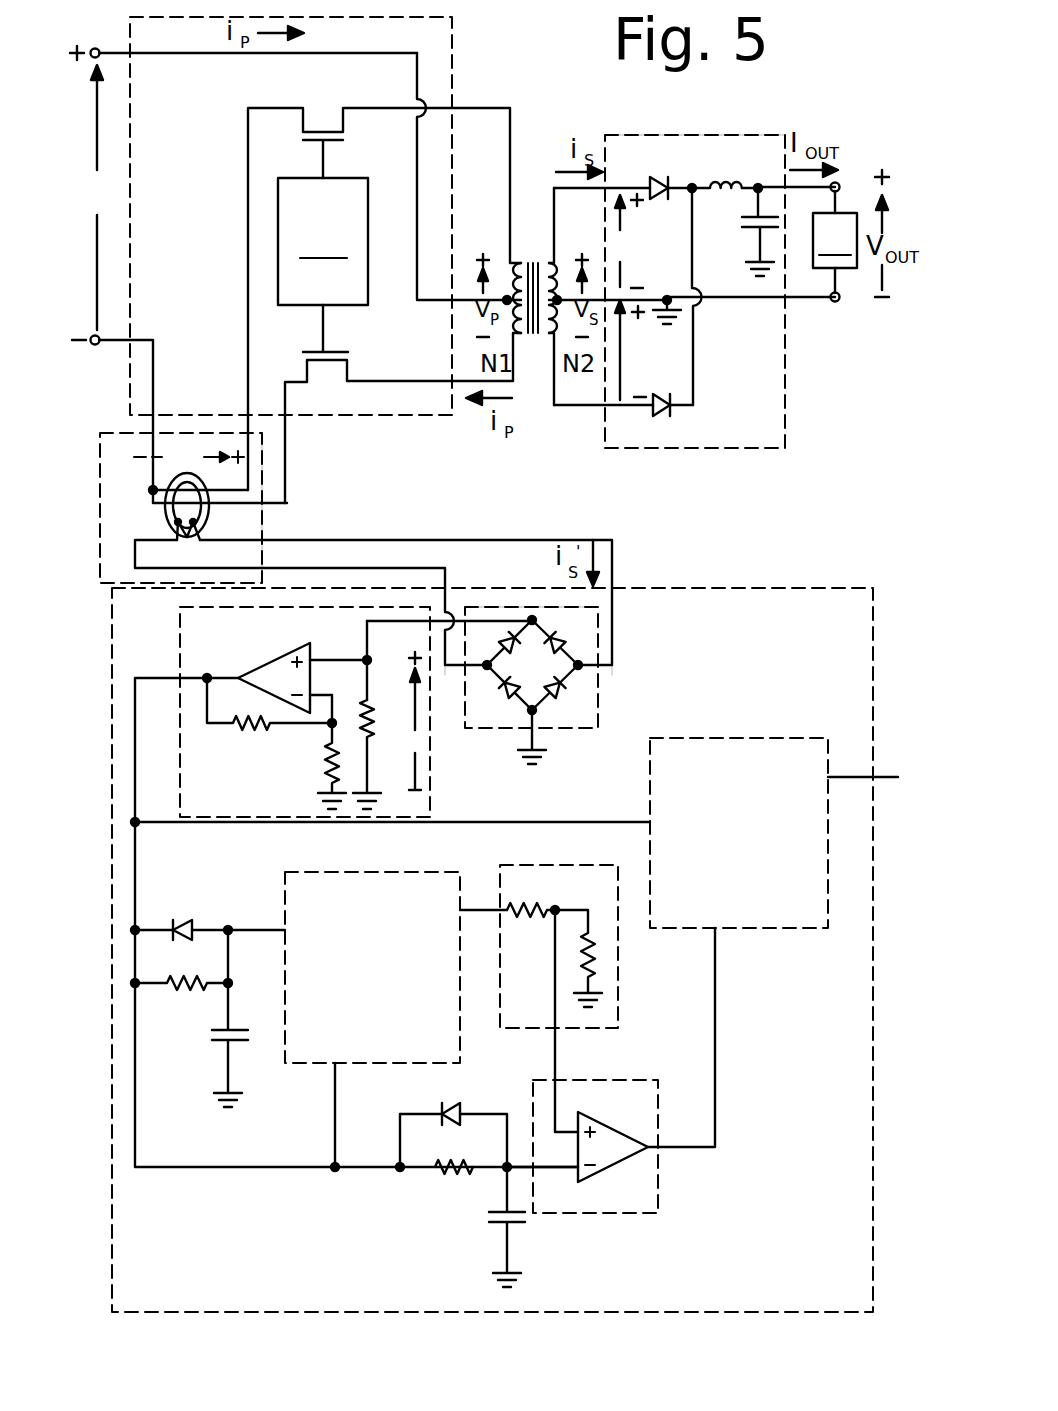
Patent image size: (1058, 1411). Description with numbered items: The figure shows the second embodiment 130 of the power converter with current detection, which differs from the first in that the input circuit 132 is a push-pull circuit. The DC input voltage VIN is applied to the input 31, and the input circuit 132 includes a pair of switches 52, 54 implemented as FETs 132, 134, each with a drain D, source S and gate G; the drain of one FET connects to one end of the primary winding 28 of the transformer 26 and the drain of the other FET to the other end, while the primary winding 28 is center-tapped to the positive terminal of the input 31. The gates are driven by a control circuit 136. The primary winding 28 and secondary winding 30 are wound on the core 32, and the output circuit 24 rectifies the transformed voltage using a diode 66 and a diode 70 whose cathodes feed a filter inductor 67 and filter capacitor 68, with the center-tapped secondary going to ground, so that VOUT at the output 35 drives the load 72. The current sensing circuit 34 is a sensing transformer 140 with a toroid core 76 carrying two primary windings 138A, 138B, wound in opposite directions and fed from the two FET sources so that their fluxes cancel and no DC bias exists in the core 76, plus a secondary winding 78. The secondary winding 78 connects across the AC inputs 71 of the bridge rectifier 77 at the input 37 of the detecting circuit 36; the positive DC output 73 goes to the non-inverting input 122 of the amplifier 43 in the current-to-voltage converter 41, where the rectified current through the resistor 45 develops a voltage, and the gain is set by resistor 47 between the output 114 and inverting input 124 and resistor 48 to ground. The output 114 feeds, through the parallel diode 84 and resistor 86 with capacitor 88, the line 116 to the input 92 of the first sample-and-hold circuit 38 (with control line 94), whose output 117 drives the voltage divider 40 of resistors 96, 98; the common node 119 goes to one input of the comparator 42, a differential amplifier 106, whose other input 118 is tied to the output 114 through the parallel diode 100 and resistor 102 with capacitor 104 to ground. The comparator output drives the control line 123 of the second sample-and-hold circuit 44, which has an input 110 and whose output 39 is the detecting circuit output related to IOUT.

The output circuit 24 is at (694, 269).
The transformer 26 is at (567, 268).
The primary winding 28 is at (507, 266).
The secondary winding 30 is at (553, 266).
The input 31 is at (72, 76).
The core 32 is at (535, 340).
The current sensing circuit 34 is at (196, 513).
The output 35 is at (857, 191).
The detecting circuit 36 is at (788, 576).
The input 37 is at (632, 578).
The first sample-and-hold circuit 38 is at (323, 864).
The output 39 is at (880, 777).
The voltage divider 40 is at (559, 926).
The current-to-voltage converter 41 is at (280, 707).
The comparator 42 is at (631, 1149).
The amplifier 43 is at (262, 663).
The sample-and-hold circuit 44 is at (738, 726).
The resistor 45 is at (373, 702).
The resistor 47 is at (243, 731).
The resistor 48 is at (325, 776).
The switch 52 is at (292, 359).
The switch 54 is at (293, 133).
The diode 66 is at (659, 177).
The filter inductor 67 is at (725, 180).
The filter capacitor 68 is at (745, 218).
The diode 70 is at (661, 415).
The AC inputs 71 is at (613, 672).
The load 72 is at (835, 242).
The positive DC output 73 is at (522, 752).
The toroid core 76 is at (206, 509).
The bridge rectifier 77 is at (610, 720).
The secondary winding 78 is at (173, 535).
The diode 84 is at (186, 918).
The resistor 86 is at (185, 991).
The capacitor 88 is at (218, 1039).
The input 92 is at (258, 935).
The control line 94 is at (334, 1120).
The resistor 96 is at (525, 919).
The resistor 98 is at (592, 934).
The diode 100 is at (445, 1102).
The resistor 102 is at (452, 1175).
The capacitor 104 is at (498, 1223).
The differential amplifier 106 is at (616, 1166).
The input 110 is at (622, 821).
The output 114 is at (158, 678).
The sample-and-hold input line 116 is at (228, 922).
The output 117 is at (480, 908).
The input 118 is at (512, 1160).
The common connection node 119 is at (558, 1055).
The non-inverting input 122 is at (331, 658).
The control line 123 is at (716, 1025).
The inverting input 124 is at (337, 690).
The second embodiment 130 is at (827, 97).
The input circuit 132 is at (465, 66).
The FET 134 is at (346, 122).
The control circuit 136 is at (323, 241).
The primary winding 138A is at (150, 488).
The primary winding 138B is at (258, 504).
The sensing transformer 140 is at (272, 456).